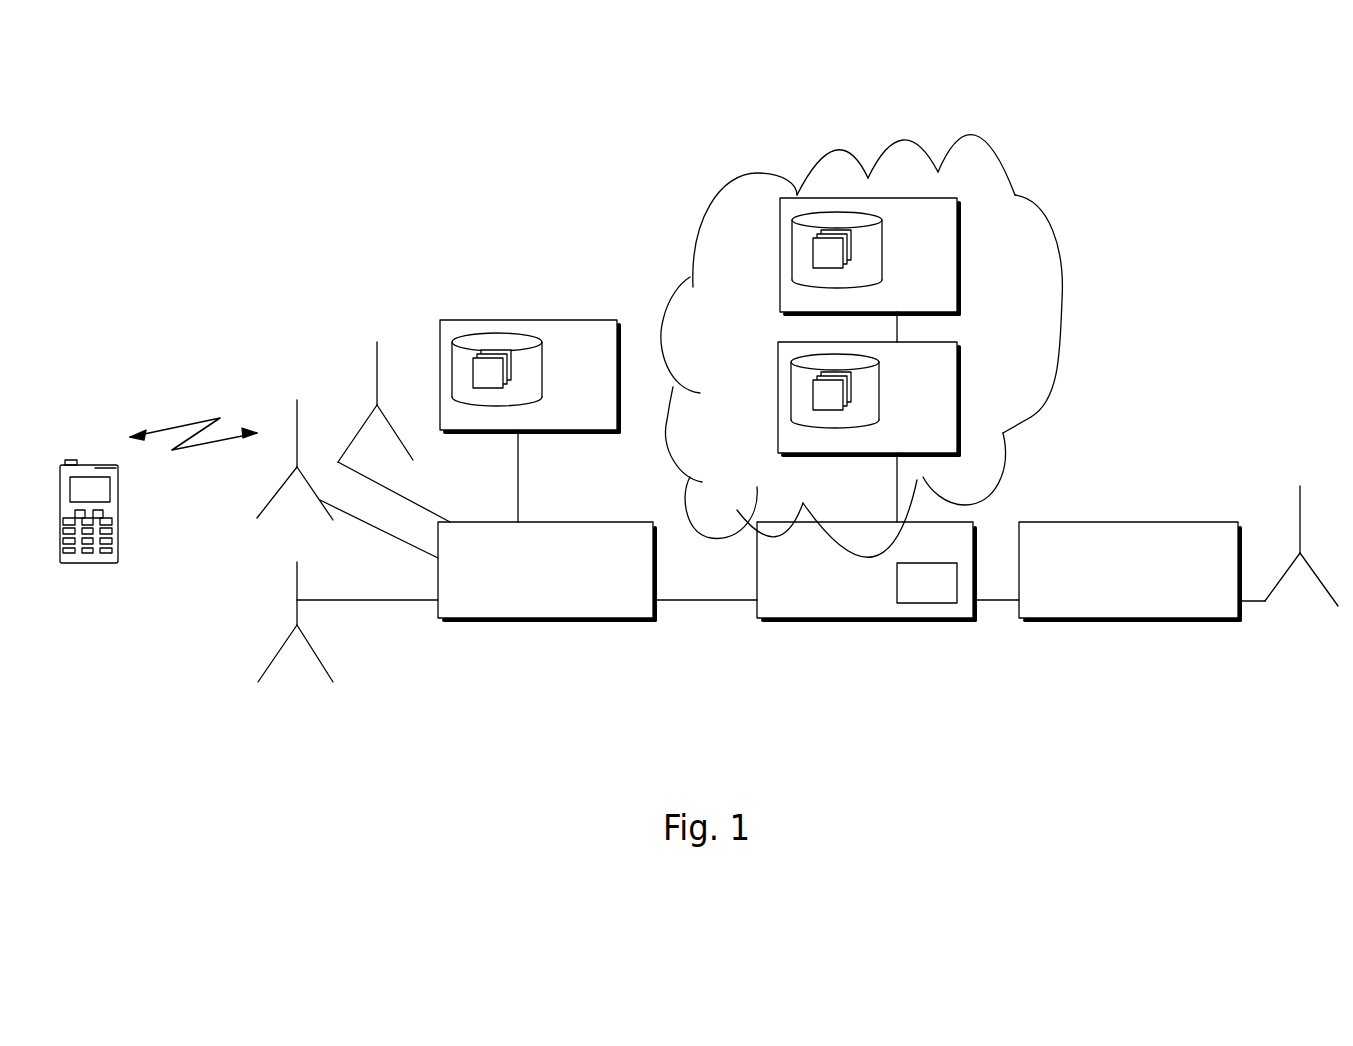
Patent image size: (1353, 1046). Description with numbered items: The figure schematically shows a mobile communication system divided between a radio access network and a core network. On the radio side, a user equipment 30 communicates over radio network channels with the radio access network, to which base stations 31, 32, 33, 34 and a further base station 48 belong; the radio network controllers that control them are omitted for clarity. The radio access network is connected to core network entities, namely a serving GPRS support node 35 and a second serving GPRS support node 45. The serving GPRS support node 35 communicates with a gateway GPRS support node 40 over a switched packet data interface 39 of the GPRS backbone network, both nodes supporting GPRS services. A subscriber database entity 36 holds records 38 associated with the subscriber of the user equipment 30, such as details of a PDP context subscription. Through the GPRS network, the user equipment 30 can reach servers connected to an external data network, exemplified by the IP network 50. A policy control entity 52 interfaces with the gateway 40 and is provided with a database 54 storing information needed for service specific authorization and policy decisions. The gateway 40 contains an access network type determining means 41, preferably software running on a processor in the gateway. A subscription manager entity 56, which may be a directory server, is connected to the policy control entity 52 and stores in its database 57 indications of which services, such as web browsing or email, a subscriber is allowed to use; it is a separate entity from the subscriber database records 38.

The user equipment 30 is at (118, 563).
The base station 31 is at (238, 189).
The base station 32 is at (257, 518).
The base station 33 is at (278, 650).
The base station 34 is at (370, 360).
The serving GPRS support node 35 is at (497, 598).
The subscriber database entity 36 is at (542, 303).
The records 38 is at (480, 338).
The interface 39 is at (697, 600).
The gateway GPRS support node 40 is at (888, 637).
The access network type determining means 41 is at (917, 583).
The serving GPRS support node 45 is at (1080, 583).
The base station 48 is at (1283, 585).
The IP network 50 is at (738, 235).
The policy control entity 52 is at (943, 362).
The database 54 is at (857, 410).
The subscription manager entity 56 is at (868, 199).
The database 57 is at (838, 217).